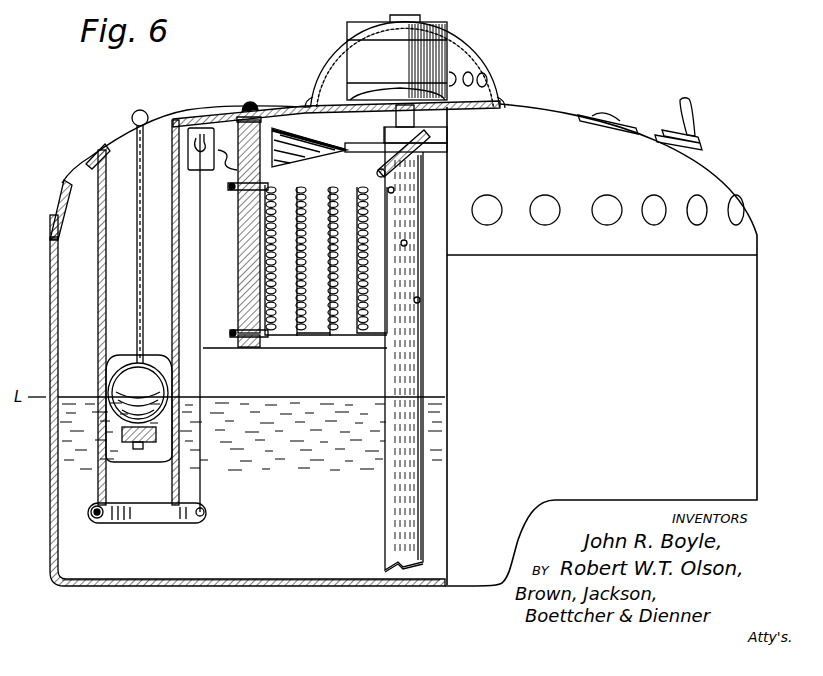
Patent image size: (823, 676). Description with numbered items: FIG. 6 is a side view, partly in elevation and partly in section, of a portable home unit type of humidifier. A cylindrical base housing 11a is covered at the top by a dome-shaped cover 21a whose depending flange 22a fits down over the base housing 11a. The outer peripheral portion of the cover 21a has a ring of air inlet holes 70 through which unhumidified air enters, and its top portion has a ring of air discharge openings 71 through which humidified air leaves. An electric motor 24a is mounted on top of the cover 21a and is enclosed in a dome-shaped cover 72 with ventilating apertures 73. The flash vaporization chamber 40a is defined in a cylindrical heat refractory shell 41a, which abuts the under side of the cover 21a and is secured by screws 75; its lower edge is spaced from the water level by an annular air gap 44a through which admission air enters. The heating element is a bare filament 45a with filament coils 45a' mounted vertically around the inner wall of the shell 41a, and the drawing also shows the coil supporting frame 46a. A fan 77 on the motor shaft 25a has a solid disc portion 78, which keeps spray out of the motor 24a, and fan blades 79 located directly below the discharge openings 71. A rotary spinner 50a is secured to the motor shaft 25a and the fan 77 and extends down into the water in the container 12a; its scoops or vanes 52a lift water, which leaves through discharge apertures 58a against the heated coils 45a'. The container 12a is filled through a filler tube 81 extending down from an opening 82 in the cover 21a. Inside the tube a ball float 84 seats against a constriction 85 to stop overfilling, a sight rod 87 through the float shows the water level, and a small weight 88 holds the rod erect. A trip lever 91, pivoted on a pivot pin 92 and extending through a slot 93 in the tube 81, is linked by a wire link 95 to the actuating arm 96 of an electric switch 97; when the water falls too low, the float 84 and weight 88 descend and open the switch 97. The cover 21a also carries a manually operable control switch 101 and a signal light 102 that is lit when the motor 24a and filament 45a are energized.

The cylindrical base housing 11a is at (55, 340).
The water container 12a is at (72, 550).
The depending flange 22a is at (52, 233).
The air inlet holes 70 is at (60, 200).
The dome-shaped cover 21a is at (86, 160).
The opening 82 is at (92, 148).
The air discharge openings 71 is at (276, 112).
The screws 75 is at (246, 104).
The electric switch 97 is at (190, 118).
The filler tube 81 is at (98, 276).
The actuating arm 96 is at (196, 152).
The wire link 95 is at (205, 488).
The sight rod 87 is at (134, 120).
The constriction 85 is at (112, 350).
The ball float 84 is at (118, 386).
The weight 88 is at (122, 438).
The trip lever 91 is at (142, 522).
The pivot pin 92 is at (104, 523).
The slot 93 is at (178, 523).
The flash vaporization chamber 40a is at (248, 226).
The heat refractory shell 41a is at (238, 250).
The annular air gap 44a is at (226, 351).
The coil frame 46a is at (300, 338).
The heating filament 45a is at (317, 246).
The filament coils 45a' is at (329, 360).
The fan blades 79 is at (308, 143).
The solid disc portion 78 is at (364, 143).
The fan 77 is at (439, 140).
The dome-shaped cover 72 is at (472, 40).
The ventilating apertures 73 is at (490, 77).
The electric motor 24a is at (368, 52).
The motor shaft 25a is at (403, 115).
The rotary spinner 50a is at (410, 330).
The scoops or vanes 52a is at (412, 566).
The discharge apertures 58a is at (394, 192).
The control switch 101 is at (700, 110).
The signal light 102 is at (604, 111).